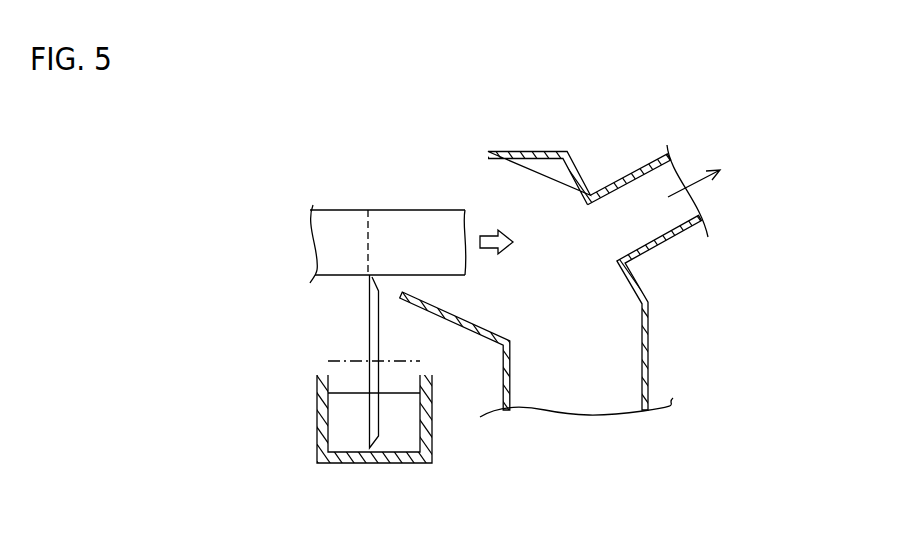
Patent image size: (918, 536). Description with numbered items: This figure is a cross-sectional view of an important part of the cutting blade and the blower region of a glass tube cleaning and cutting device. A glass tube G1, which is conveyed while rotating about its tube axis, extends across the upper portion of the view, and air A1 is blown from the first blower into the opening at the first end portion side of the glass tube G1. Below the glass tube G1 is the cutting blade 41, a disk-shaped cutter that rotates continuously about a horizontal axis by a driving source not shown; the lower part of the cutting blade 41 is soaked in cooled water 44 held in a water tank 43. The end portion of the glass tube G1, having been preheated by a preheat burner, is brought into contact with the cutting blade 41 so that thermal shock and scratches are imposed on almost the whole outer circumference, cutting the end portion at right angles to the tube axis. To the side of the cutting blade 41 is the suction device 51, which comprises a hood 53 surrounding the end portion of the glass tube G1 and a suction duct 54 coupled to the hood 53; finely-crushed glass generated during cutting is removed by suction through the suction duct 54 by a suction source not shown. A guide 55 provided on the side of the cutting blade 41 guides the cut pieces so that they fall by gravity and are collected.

The cutting blade 41 is at (345, 320).
The water tank 43 is at (317, 414).
The cooled water 44 is at (343, 392).
The suction device 51 is at (665, 124).
The hood 53 is at (523, 151).
The suction duct 54 is at (614, 183).
The guide 55 is at (472, 332).
The glass tube G1 is at (338, 210).
The air A1 is at (514, 244).